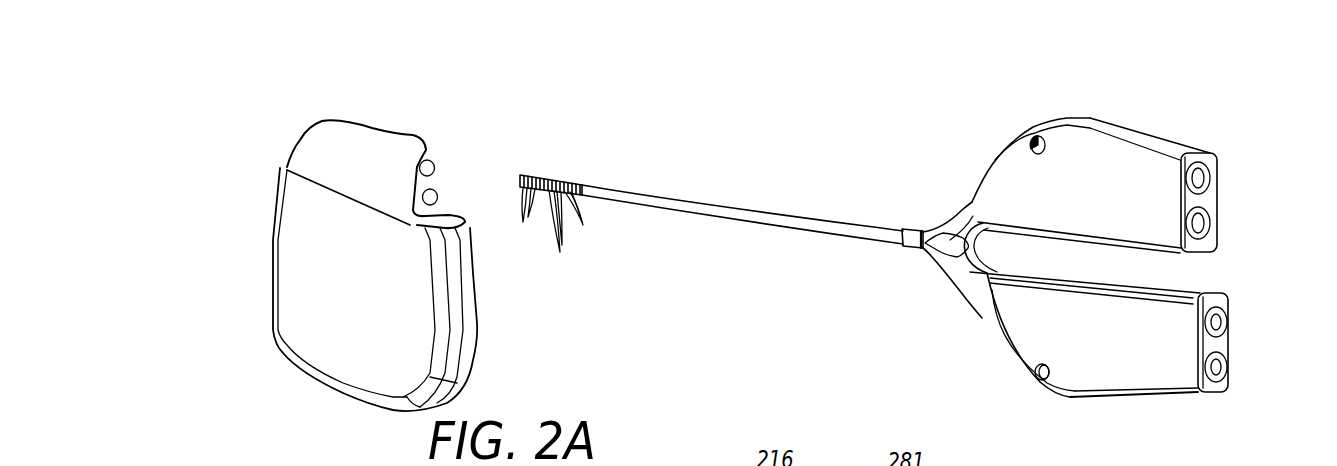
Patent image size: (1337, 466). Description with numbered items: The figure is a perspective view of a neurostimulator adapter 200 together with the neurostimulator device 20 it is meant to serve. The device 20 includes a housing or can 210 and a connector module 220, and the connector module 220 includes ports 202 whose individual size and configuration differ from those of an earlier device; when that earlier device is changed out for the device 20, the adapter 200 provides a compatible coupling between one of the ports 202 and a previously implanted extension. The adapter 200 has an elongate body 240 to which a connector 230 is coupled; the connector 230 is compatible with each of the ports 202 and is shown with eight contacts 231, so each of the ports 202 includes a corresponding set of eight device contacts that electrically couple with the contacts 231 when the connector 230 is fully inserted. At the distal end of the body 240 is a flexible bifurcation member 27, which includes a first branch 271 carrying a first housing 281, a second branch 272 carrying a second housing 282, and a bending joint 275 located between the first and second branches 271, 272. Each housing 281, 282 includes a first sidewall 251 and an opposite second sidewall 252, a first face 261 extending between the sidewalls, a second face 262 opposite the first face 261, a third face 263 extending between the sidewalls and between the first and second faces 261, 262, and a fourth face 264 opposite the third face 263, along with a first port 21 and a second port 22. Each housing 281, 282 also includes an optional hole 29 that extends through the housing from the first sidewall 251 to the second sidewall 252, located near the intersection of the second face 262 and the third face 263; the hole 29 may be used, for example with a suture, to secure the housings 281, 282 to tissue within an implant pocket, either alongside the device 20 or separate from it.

The neurostimulator device 20 is at (353, 237).
The connector module 220 is at (345, 132).
The ports 202 is at (432, 197).
The housing or can 210 is at (292, 310).
The connector 230 is at (560, 206).
The contacts 231 is at (523, 223).
The elongate body 240 is at (676, 206).
The neurostimulator adapter 200 is at (882, 97).
The bending joint 275 is at (930, 240).
The first branch 271 is at (965, 213).
The second branch 272 is at (970, 271).
The flexible bifurcation member 27 is at (967, 296).
The first housing 281 is at (1133, 150).
The second housing 282 is at (1106, 369).
The first sidewall 251 is at (1133, 160).
The second sidewall 252 is at (1119, 344).
The second face 262 is at (995, 160).
The third face 263 is at (1107, 122).
The fourth face 264 is at (1205, 282).
The first face 261 is at (1210, 198).
The hole 29 is at (1034, 137).
The first port 21 is at (1208, 177).
The second port 22 is at (1207, 223).